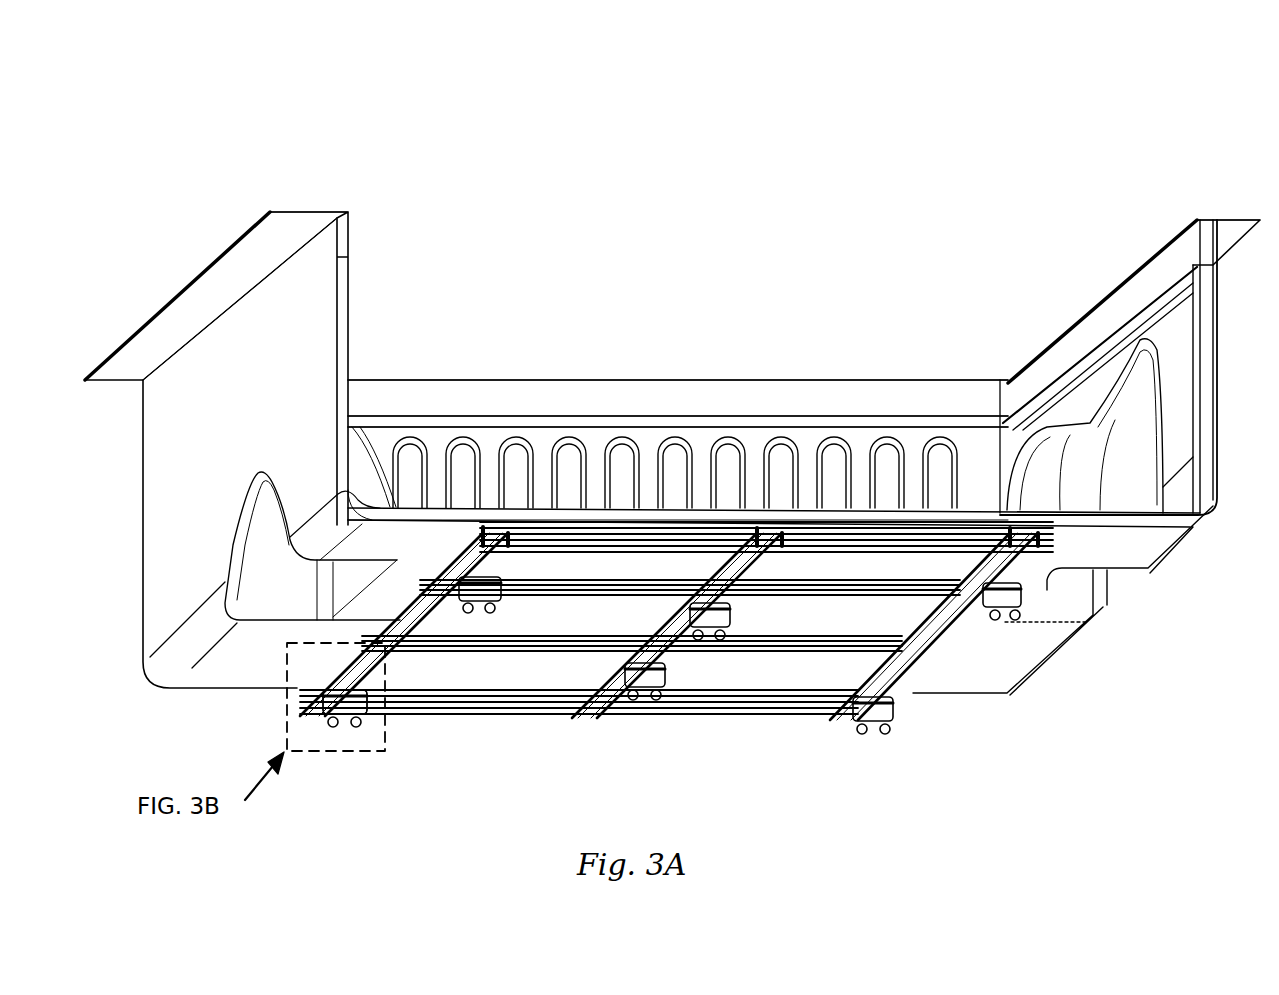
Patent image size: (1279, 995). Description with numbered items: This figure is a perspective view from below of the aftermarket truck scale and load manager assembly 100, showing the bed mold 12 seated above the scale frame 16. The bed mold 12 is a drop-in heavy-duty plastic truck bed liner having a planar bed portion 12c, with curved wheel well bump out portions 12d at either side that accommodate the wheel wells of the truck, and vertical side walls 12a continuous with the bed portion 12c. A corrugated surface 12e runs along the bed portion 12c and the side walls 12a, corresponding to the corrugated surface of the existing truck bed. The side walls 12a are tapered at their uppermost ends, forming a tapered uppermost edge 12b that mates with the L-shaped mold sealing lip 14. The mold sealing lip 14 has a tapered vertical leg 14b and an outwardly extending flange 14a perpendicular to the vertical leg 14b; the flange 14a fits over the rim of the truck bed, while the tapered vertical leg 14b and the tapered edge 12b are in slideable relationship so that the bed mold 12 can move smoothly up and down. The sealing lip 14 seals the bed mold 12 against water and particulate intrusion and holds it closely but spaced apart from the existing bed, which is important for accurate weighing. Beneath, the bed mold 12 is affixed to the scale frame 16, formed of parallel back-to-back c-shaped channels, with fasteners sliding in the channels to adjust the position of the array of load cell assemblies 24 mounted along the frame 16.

The aftermarket truck scale and load manager assembly 100 is at (970, 121).
The bed mold 12 is at (182, 552).
The side walls 12a is at (805, 445).
The tapered uppermost edge 12b is at (292, 255).
The planar bed portion 12c is at (710, 505).
The curved wheel well bump out portions 12d is at (1080, 577).
The corrugated surface 12e is at (880, 445).
The mold sealing lip 14 is at (993, 400).
The outwardly extending flange 14a is at (255, 260).
The vertical leg 14b is at (575, 403).
The scale frame 16 is at (722, 716).
The load cell assemblies 24 is at (348, 702).